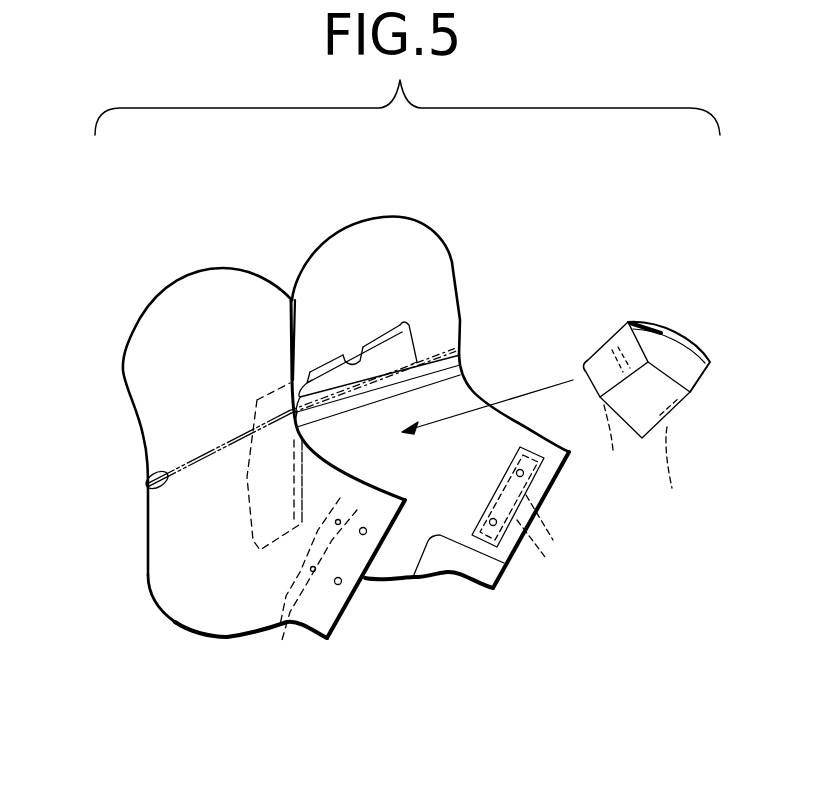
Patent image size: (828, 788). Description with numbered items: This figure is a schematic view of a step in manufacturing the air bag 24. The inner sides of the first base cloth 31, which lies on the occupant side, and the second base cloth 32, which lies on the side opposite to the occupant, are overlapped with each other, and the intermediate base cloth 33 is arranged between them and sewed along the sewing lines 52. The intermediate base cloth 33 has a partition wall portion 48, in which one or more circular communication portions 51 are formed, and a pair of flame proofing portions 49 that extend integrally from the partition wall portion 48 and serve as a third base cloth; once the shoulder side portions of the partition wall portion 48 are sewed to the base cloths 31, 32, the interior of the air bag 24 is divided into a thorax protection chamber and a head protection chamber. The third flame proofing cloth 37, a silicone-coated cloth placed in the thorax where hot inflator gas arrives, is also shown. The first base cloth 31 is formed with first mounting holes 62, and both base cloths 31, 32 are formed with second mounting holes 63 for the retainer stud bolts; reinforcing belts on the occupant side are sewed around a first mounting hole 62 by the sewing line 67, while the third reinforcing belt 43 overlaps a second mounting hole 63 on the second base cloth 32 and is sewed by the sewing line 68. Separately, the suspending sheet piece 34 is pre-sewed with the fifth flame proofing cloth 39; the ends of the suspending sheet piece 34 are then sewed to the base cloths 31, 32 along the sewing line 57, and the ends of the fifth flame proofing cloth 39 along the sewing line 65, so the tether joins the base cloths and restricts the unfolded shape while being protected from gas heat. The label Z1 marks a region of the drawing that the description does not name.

The air bag 24 is at (495, 228).
The region Z1 is at (527, 298).
The first base cloth 31 is at (191, 603).
The second base cloth 32 is at (400, 570).
The third flame proofing cloth 37 is at (457, 568).
The intermediate base cloth 33 is at (383, 334).
The communication portion 51 is at (352, 350).
The partition wall portion 48 is at (408, 325).
The sewing line 52 is at (455, 350).
The flame proofing portion 49 is at (247, 483).
The sewing line 67 is at (281, 648).
The first mounting hole 62 is at (340, 518).
The second mounting hole 63 is at (523, 469).
The third reinforcing belt 43 is at (522, 484).
The sewing line 68 is at (545, 540).
The suspending sheet piece 34 is at (660, 328).
The fifth flame proofing cloth 39 is at (702, 356).
The sewing line 57 is at (611, 448).
The sewing line 65 is at (677, 474).